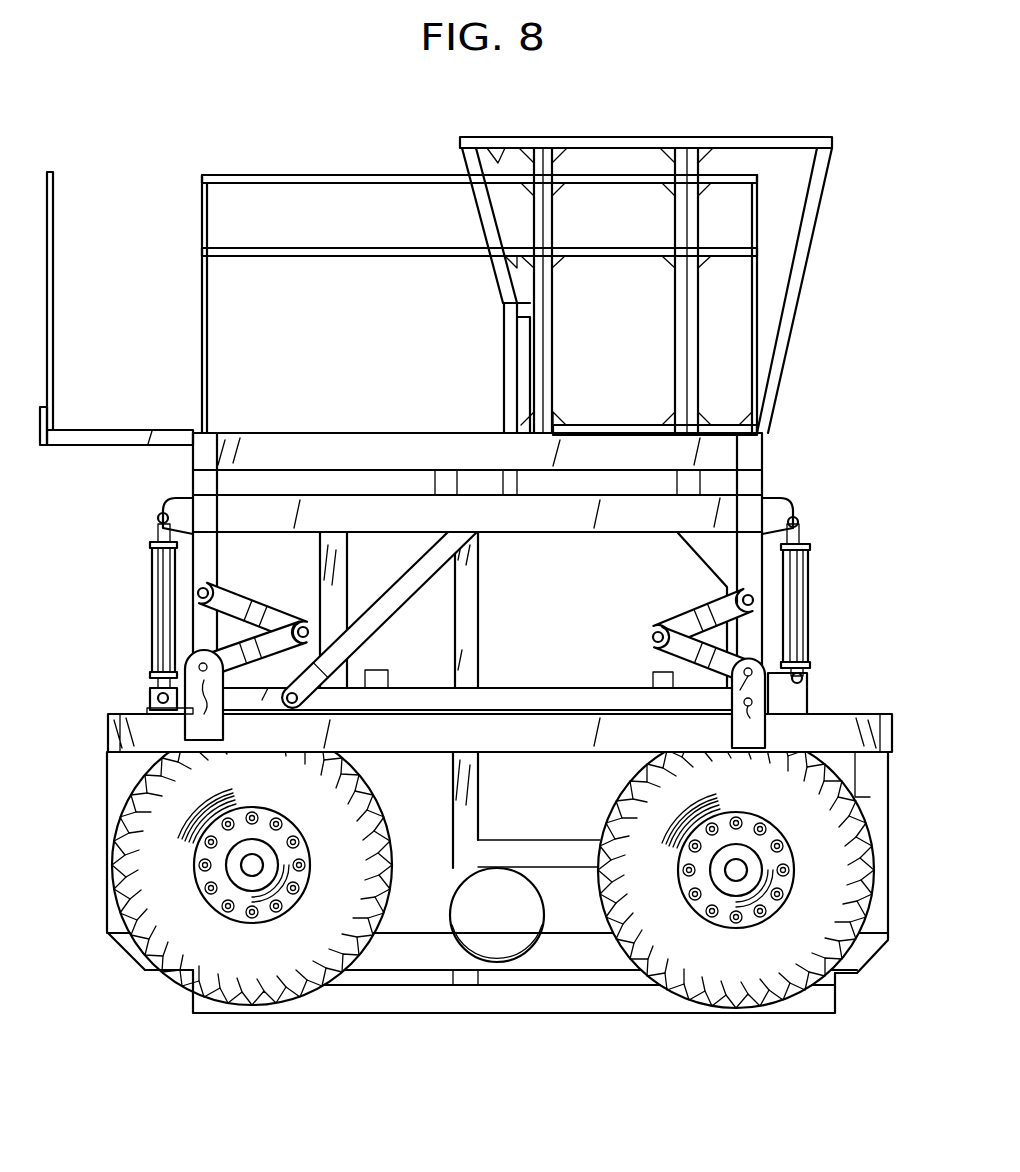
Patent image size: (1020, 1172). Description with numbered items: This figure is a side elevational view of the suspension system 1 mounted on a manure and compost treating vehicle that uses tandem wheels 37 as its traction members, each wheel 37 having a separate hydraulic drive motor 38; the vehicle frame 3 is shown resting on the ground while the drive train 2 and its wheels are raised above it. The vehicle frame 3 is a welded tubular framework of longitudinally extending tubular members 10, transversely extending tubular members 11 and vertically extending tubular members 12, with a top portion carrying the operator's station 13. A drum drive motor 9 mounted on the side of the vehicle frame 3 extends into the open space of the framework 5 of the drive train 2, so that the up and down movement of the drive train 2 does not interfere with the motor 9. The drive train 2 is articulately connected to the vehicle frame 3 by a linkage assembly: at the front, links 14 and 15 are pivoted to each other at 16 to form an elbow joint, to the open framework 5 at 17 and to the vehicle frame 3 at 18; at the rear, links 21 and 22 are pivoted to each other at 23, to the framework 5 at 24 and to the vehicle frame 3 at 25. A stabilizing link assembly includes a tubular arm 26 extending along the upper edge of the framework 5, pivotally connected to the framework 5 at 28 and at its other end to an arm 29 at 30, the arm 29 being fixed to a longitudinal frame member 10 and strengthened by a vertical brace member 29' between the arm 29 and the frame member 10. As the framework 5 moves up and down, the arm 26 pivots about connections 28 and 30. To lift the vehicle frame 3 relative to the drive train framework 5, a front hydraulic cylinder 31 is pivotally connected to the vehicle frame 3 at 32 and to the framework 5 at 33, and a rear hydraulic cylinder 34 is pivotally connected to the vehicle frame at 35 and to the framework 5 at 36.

The suspension system 1 is at (475, 637).
The drive train 2 is at (464, 841).
The vehicle frame 3 is at (122, 472).
The open framework 5 is at (107, 800).
The drum drive motor 9 is at (487, 928).
The longitudinally extending tubular members 10 is at (474, 465).
The transversely extending tubular members 11 is at (203, 483).
The vertically extending tubular members 12 is at (480, 585).
The operator's station 13 is at (490, 338).
The links 14 is at (665, 655).
The links 15 is at (693, 612).
The pivot connection 16 is at (648, 636).
The pivot connection 17 is at (745, 676).
The pivot connection 18 is at (753, 592).
The links 21 is at (265, 695).
The links 22 is at (300, 626).
The pivot connection 23 is at (302, 646).
The pivot connection 24 is at (204, 695).
The pivot connection 25 is at (205, 588).
The tubular arm 26 is at (540, 687).
The pivot connection 28 is at (748, 704).
The arm 29 is at (379, 620).
The vertical brace member 29' is at (360, 610).
The pivot connection 30 is at (292, 706).
The hydraulic cylinder 31 is at (810, 575).
The pivot connection 32 is at (800, 520).
The pivot connection 33 is at (805, 678).
The hydraulic cylinder 34 is at (150, 575).
The pivot connection 35 is at (158, 518).
The pivot connection 36 is at (158, 698).
The tandem wheels 37 is at (372, 803).
The hydraulic drive motor 38 is at (268, 860).